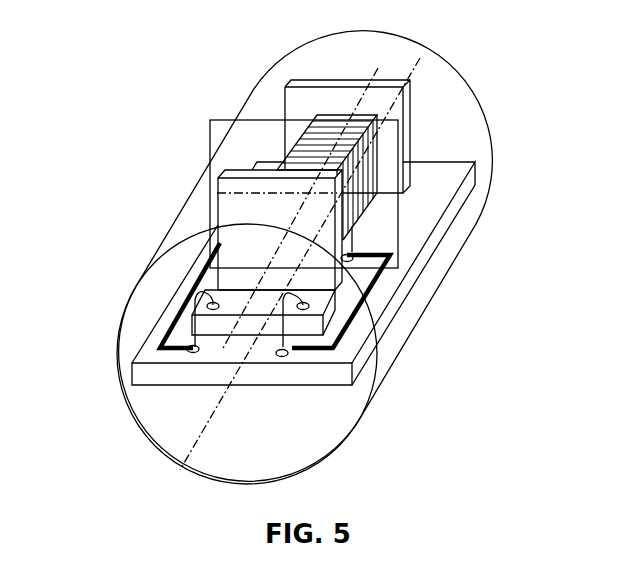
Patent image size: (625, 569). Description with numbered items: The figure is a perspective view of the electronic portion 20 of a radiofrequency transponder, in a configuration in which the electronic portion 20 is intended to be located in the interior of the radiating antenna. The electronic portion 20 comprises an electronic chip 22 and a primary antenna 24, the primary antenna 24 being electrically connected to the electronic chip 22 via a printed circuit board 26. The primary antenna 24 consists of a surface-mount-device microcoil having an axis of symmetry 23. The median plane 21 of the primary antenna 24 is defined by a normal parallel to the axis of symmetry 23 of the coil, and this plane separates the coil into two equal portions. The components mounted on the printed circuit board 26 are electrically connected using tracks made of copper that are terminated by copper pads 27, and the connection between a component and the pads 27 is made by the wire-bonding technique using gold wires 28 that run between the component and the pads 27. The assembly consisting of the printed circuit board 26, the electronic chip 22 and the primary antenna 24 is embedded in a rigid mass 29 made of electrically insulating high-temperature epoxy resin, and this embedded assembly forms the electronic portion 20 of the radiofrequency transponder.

The electronic portion 20 is at (175, 160).
The median plane 21 is at (402, 227).
The electronic chip 22 is at (236, 298).
The axis of symmetry 23 is at (359, 102).
The primary antenna 24 is at (360, 146).
The printed circuit board 26 is at (148, 356).
The copper pads 27 is at (207, 356).
The gold wires 28 is at (205, 328).
The rigid mass 29 is at (489, 149).